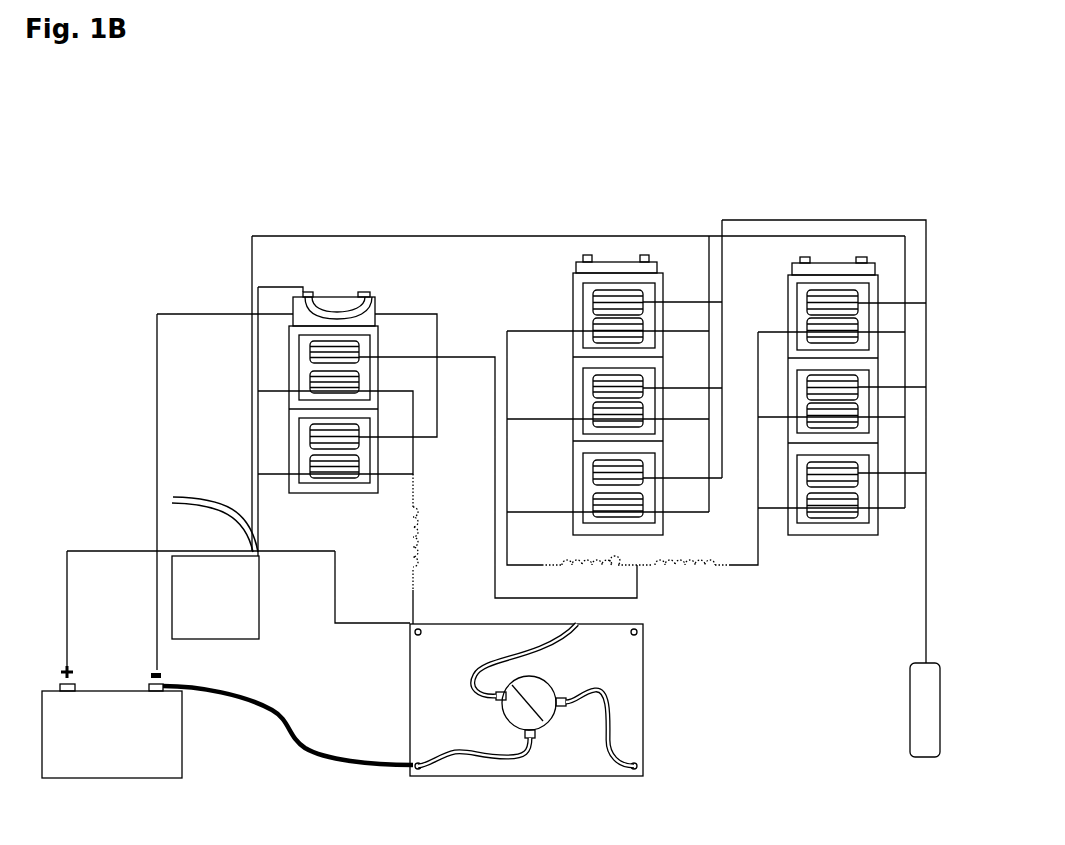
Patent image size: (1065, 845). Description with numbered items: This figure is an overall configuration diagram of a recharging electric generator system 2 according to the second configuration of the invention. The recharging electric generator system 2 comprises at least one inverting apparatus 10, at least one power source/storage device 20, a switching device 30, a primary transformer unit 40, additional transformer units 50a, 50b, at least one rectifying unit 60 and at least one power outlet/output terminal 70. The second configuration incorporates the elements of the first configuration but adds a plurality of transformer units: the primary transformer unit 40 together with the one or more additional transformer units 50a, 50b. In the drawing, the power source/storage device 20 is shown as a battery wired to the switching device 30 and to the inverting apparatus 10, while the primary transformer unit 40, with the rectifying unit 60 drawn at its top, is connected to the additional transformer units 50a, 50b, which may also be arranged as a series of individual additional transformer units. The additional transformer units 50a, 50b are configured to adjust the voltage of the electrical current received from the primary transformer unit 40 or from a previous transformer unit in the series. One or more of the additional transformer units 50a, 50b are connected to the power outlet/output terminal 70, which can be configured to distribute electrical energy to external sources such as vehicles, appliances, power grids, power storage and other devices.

The recharging electric generator system 2 is at (843, 173).
The inverting apparatus 10 is at (643, 715).
The power source/storage device 20 is at (182, 733).
The switching device 30 is at (259, 640).
The primary transformer unit 40 is at (335, 292).
The additional transformer unit 50a is at (575, 272).
The additional transformer unit 50b is at (790, 272).
The rectifying unit 60 is at (375, 304).
The power outlet/output terminal 70 is at (923, 720).